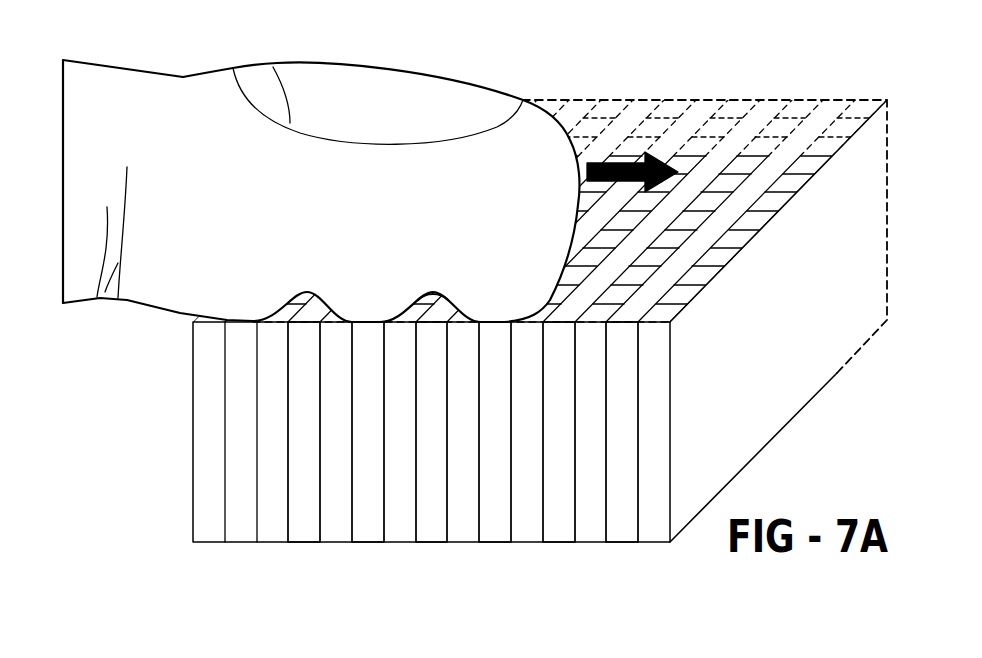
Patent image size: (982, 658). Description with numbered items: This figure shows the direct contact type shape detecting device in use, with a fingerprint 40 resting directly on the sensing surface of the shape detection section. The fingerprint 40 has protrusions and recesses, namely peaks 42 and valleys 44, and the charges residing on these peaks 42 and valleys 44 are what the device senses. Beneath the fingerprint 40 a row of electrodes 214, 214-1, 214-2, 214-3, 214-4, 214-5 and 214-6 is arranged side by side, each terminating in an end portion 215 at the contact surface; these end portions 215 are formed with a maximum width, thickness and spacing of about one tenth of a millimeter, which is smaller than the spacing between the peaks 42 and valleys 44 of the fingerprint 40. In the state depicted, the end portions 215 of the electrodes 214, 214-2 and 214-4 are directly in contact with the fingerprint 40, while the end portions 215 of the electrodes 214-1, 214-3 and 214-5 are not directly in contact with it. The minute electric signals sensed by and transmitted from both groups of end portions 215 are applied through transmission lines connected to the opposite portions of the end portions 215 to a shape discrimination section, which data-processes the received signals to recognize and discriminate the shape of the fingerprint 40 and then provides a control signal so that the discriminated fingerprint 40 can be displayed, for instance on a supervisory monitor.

The fingerprint 40 is at (483, 100).
The peak 42 is at (370, 320).
The valley 44 is at (432, 293).
The electrode 214 is at (233, 545).
The electrode 214-1 is at (298, 545).
The electrode 214-2 is at (363, 545).
The electrode 214-3 is at (428, 545).
The electrode 214-4 is at (492, 545).
The electrode 214-5 is at (557, 545).
The electrode 214-6 is at (621, 545).
The end portions of the electrodes 215 is at (687, 123).